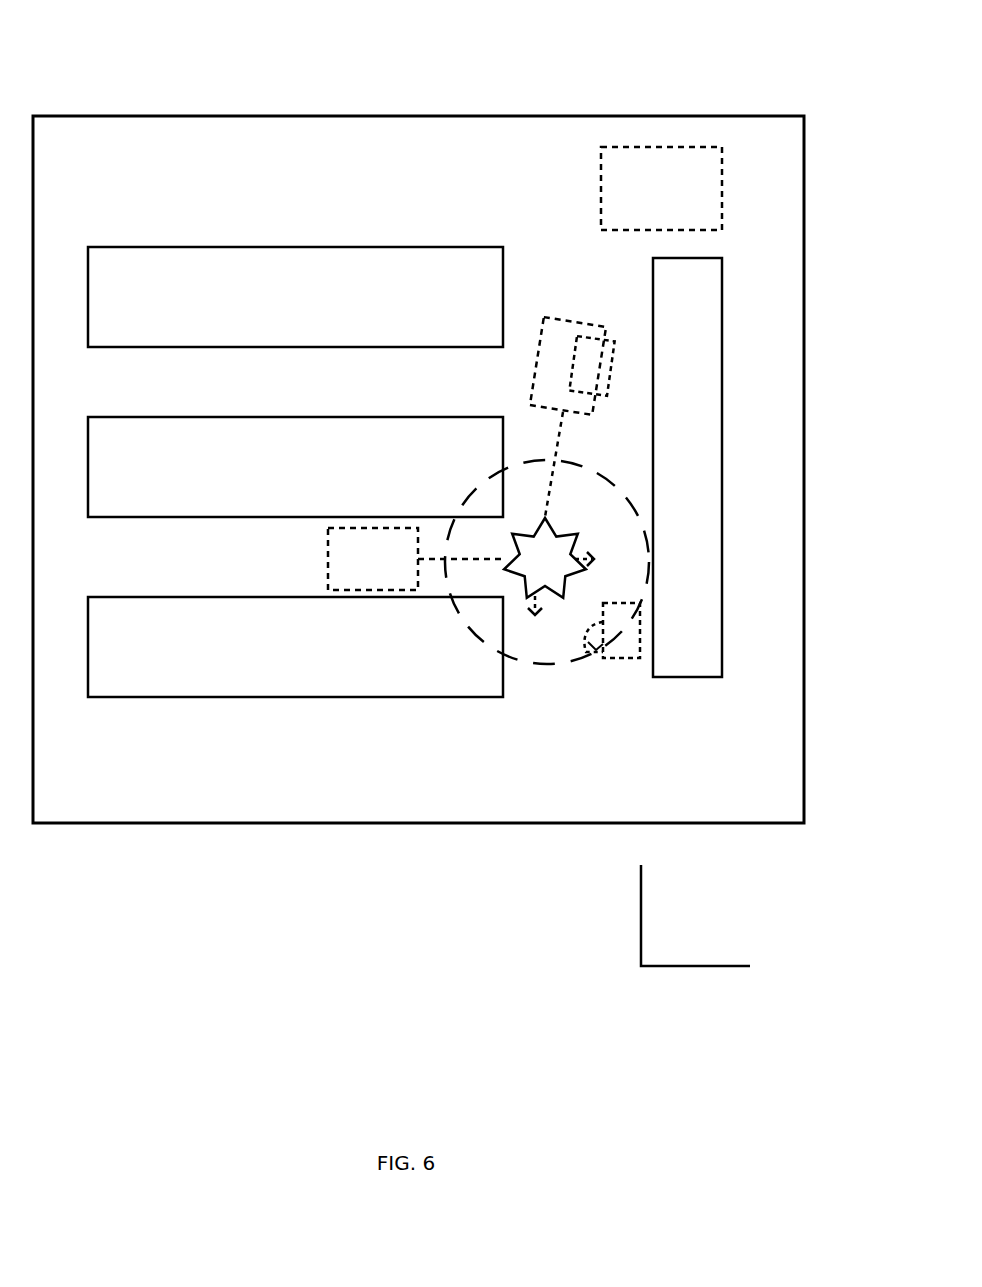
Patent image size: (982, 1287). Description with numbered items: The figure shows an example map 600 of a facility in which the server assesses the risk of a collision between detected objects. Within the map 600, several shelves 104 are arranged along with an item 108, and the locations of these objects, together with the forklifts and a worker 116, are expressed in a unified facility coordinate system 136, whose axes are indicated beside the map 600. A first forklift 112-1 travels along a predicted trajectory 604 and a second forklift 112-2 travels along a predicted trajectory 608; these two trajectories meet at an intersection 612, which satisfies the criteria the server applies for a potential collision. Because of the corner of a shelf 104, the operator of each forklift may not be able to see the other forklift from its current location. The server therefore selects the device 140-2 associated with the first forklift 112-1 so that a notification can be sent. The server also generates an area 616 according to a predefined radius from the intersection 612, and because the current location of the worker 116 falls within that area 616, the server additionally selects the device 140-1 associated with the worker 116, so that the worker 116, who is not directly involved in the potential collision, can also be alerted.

The map 600 is at (168, 100).
The item 108 is at (661, 188).
The shelf 104 is at (405, 472).
The first forklift 112-1 is at (570, 330).
The device 140-2 is at (613, 353).
The trajectory 604 is at (555, 433).
The intersection 612 is at (549, 566).
The second forklift 112-2 is at (373, 559).
The trajectory 608 is at (467, 560).
The area 616 is at (528, 663).
The device 140-1 is at (640, 614).
The worker 116 is at (598, 648).
The facility coordinate system 136 is at (683, 1010).